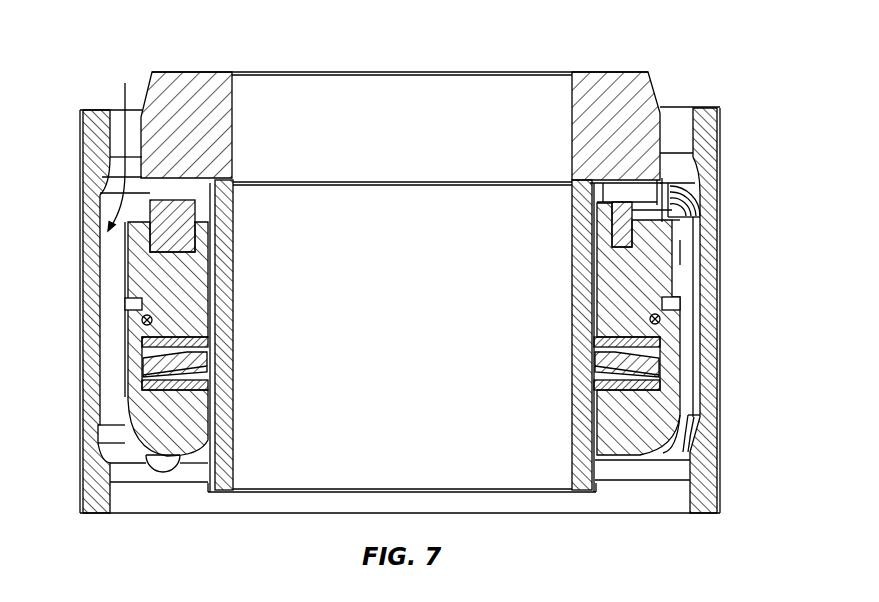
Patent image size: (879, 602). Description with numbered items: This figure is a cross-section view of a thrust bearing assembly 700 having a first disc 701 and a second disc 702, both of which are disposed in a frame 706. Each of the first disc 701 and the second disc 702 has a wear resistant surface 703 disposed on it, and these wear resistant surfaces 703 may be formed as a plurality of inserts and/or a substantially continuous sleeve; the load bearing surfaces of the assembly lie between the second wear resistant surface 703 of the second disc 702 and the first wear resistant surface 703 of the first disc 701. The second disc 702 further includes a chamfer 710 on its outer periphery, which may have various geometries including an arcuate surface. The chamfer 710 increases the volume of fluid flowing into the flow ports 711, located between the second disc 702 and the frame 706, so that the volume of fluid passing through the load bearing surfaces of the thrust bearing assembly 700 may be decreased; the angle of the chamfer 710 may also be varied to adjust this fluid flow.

The thrust bearing assembly 700 is at (586, 41).
The first disc 701 is at (630, 130).
The second disc 702 is at (662, 270).
The wear resistant surface 703 is at (650, 190).
The frame 706 is at (90, 230).
The chamfer 710 is at (678, 218).
The flow ports 711 is at (682, 253).